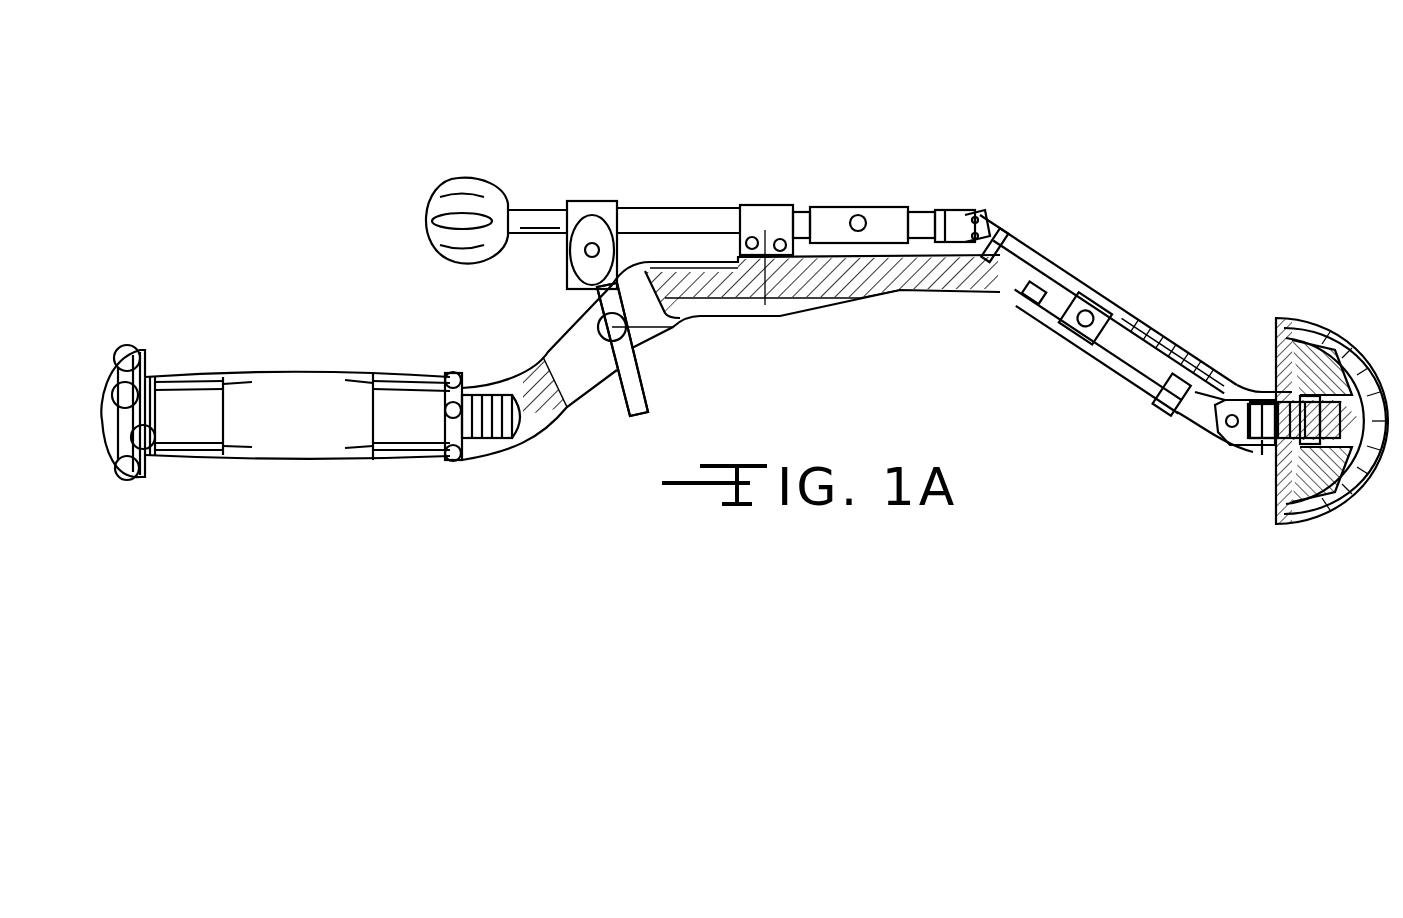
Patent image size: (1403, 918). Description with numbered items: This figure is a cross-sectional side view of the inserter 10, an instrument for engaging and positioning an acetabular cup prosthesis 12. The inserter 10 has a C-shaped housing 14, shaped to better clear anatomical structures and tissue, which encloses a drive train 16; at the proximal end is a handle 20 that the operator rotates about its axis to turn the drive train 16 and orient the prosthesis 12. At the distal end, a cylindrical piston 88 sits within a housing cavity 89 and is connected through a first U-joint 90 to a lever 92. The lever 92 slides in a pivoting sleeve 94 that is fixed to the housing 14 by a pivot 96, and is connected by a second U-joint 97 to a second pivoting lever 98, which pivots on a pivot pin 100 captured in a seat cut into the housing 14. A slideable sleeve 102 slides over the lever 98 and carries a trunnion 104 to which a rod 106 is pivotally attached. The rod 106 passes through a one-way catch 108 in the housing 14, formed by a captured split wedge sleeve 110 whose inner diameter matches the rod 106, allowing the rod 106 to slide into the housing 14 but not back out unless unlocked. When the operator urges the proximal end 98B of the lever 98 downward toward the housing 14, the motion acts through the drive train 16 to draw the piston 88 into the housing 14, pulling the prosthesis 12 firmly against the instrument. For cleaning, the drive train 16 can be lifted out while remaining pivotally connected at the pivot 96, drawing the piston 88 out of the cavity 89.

The inserter 10 is at (1022, 140).
The acetabular cup prosthesis 12 is at (1333, 328).
The housing 14 is at (908, 282).
The drive train 16 is at (1034, 250).
The handle 20 is at (291, 374).
The cylindrical piston 88 is at (1262, 430).
The housing cavity 89 is at (1258, 450).
The first U-joint 90 is at (1238, 382).
The lever 92 is at (1037, 283).
The pivoting sleeve 94 is at (1070, 342).
The pivot 96 is at (1098, 300).
The second U-joint 97 is at (977, 215).
The second pivoting lever 98 is at (922, 217).
The proximal end of the lever 98B is at (553, 212).
The pivot pin 100 is at (858, 213).
The slideable sleeve 102 is at (592, 200).
The trunnion 104 is at (586, 256).
The rod 106 is at (660, 395).
The one-way catch 108 is at (673, 327).
The split wedge sleeve 110 is at (673, 327).